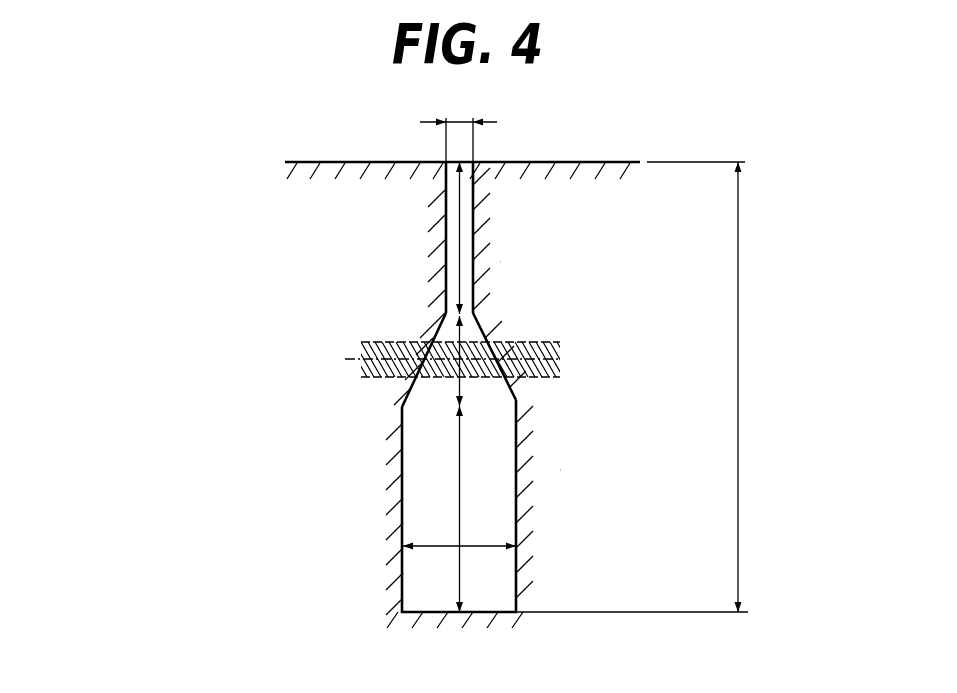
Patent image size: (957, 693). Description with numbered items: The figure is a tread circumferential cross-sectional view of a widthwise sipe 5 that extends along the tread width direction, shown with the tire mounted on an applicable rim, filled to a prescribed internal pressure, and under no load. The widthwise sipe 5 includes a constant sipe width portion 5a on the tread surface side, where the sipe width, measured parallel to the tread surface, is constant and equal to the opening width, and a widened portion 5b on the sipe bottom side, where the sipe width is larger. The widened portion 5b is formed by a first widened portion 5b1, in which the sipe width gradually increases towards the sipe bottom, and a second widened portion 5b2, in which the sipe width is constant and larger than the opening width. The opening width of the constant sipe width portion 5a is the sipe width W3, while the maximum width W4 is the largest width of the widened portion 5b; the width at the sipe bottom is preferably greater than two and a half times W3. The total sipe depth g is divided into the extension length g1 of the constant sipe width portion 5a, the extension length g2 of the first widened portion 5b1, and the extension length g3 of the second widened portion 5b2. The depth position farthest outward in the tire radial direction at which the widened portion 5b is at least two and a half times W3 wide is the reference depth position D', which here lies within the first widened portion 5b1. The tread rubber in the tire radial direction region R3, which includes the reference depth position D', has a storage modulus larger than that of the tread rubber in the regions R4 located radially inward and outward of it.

The widthwise sipe 5 is at (197, 242).
The constant sipe width portion 5a is at (450, 248).
The widened portion 5b is at (241, 342).
The first widened portion 5b1 is at (460, 406).
The second widened portion 5b2 is at (403, 612).
The sipe width of the constant sipe width portion W3 is at (458, 126).
The maximum width of the widened portion W4 is at (459, 534).
The sipe depth g is at (748, 387).
The extension length of the constant sipe width portion g1 is at (462, 218).
The extension length of the first widened portion g2 is at (462, 382).
The extension length of the second widened portion g3 is at (470, 509).
The reference depth position D' is at (443, 358).
The tire radial direction region R3 is at (554, 367).
The regions inward and outward in the tire radial direction R4 is at (526, 263).